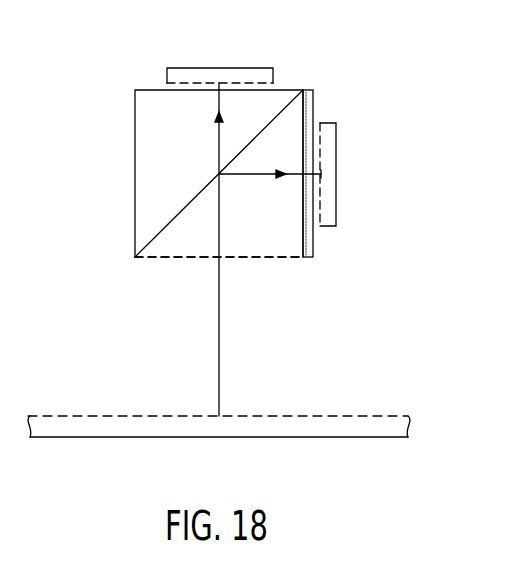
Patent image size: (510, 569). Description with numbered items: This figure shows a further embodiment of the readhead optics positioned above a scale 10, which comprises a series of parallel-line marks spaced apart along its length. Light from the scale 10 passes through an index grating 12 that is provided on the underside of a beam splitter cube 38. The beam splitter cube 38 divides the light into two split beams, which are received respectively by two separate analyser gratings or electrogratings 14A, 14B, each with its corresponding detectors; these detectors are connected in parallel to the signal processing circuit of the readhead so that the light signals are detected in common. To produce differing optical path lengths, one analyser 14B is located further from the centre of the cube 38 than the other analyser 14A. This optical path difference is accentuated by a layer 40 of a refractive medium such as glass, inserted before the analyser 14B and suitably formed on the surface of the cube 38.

The scale 10 is at (305, 416).
The index grating 12 is at (168, 258).
The analyser grating 14A is at (185, 68).
The analyser grating 14B is at (337, 157).
The beam splitter cube 38 is at (135, 155).
The layer of refractive medium 40 is at (311, 90).